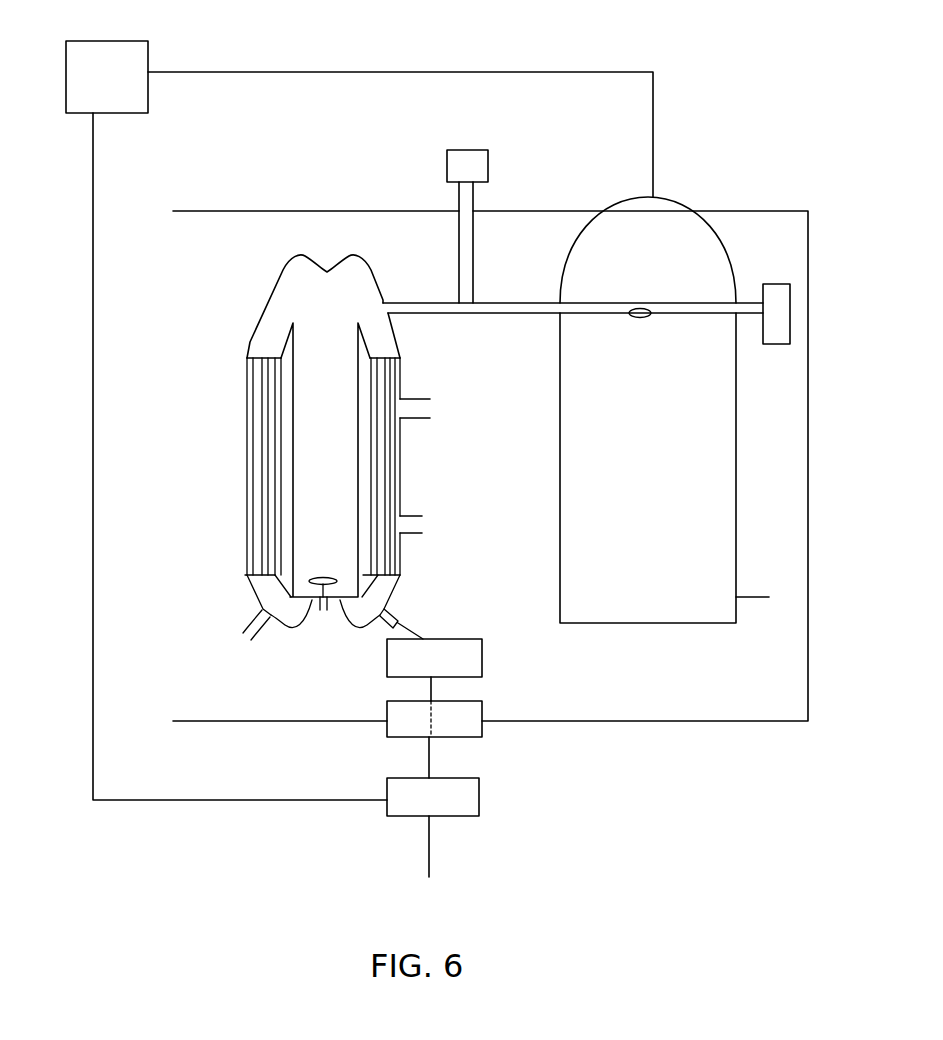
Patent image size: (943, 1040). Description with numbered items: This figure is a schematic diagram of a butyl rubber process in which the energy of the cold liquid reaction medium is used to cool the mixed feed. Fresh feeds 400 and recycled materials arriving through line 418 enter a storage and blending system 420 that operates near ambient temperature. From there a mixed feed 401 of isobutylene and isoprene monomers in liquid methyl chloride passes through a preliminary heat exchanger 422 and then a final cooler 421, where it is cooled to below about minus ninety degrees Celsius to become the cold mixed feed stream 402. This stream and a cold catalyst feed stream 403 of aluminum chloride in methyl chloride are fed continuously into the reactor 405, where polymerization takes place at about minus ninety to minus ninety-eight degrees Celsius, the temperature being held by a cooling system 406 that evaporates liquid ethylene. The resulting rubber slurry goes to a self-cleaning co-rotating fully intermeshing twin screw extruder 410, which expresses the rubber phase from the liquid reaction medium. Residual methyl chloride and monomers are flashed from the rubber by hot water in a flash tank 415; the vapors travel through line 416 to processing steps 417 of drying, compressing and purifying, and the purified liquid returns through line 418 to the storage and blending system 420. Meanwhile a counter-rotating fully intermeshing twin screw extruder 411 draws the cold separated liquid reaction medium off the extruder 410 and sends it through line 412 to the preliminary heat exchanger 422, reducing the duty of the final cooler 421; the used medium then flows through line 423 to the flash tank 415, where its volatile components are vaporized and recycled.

The fresh feeds 400 is at (428, 843).
The mixed feed 401 is at (431, 762).
The cold mixed feed stream 402 is at (403, 623).
The catalyst feed stream 403 is at (245, 633).
The reactor 405 is at (322, 441).
The cooling system 406 is at (396, 445).
The self-cleaning co-rotating fully intermeshing twin screw extruder 410 is at (508, 305).
The counter-rotating fully intermeshing twin screw extruder 411 is at (472, 235).
The line 412 is at (205, 211).
The flash tank 415 is at (664, 410).
The line 416 is at (512, 73).
The processing steps 417 is at (107, 77).
The line 418 is at (91, 345).
The storage and blending system 420 is at (433, 797).
The final cooler 421 is at (434, 658).
The preliminary heat exchanger 422 is at (480, 722).
The line 423 is at (727, 722).